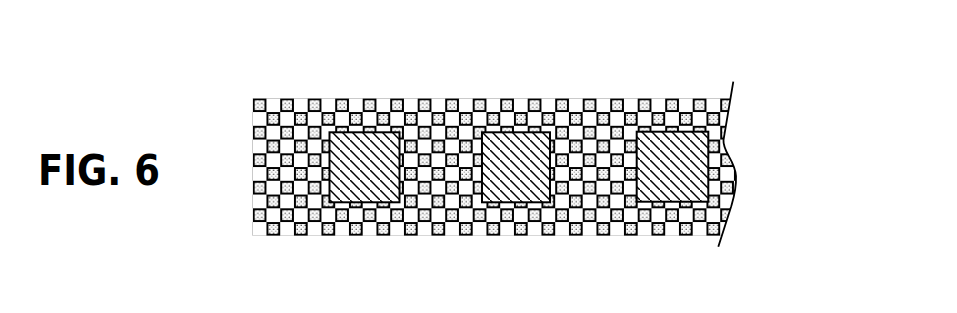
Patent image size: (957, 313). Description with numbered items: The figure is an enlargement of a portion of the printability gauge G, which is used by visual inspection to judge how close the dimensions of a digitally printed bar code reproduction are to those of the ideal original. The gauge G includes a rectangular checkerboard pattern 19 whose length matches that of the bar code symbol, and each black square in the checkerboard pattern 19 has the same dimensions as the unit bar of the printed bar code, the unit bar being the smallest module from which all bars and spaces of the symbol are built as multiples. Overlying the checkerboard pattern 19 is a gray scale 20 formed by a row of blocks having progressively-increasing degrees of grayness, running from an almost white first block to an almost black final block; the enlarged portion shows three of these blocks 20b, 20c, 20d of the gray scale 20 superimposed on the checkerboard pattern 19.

The rectangular checkerboard pattern 19 is at (287, 97).
The gray scale 20 is at (381, 154).
The block 20b is at (363, 145).
The block 20c is at (509, 155).
The block 20d is at (650, 150).
The printability gauge G is at (761, 182).